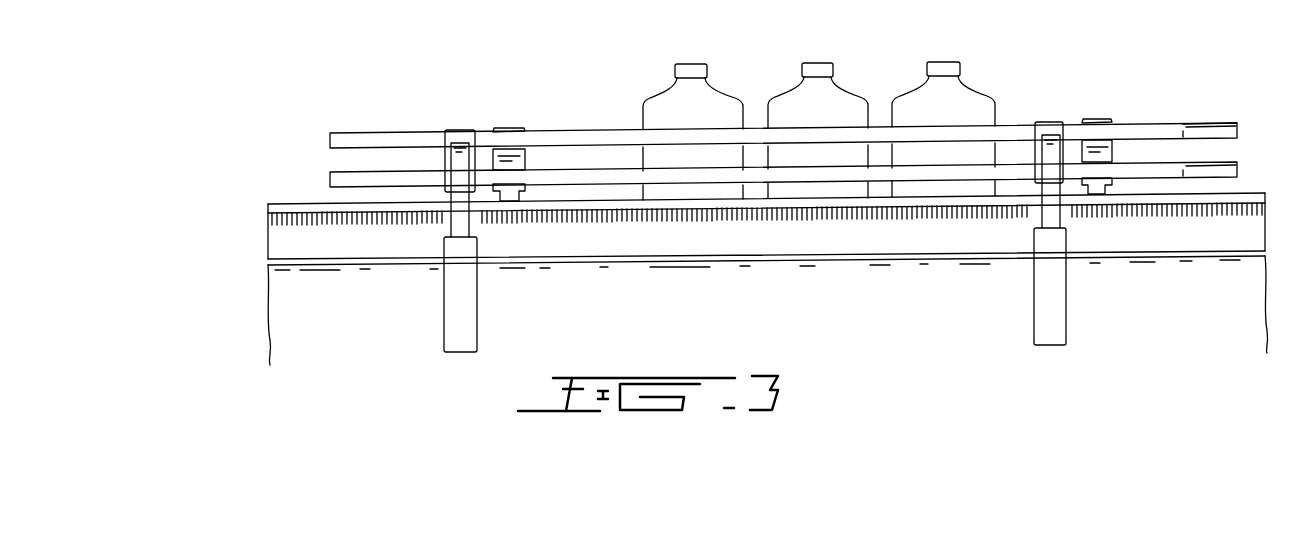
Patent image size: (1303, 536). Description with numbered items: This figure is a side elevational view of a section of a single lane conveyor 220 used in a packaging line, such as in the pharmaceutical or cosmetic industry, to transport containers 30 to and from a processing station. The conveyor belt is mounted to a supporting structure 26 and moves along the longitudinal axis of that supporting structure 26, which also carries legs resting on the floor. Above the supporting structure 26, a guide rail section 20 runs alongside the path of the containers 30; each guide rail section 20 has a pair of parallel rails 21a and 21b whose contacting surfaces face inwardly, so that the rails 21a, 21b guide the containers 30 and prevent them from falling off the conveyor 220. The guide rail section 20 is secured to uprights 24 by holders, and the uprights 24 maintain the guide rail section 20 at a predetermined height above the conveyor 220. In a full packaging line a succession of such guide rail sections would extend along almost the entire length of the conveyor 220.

The single lane conveyor 220 is at (246, 194).
The guide rail section 20 is at (591, 133).
The rail 21a is at (363, 133).
The rail 21b is at (342, 180).
The upright 24 is at (511, 128).
The supporting structure 26 is at (266, 258).
The container 30 is at (790, 97).